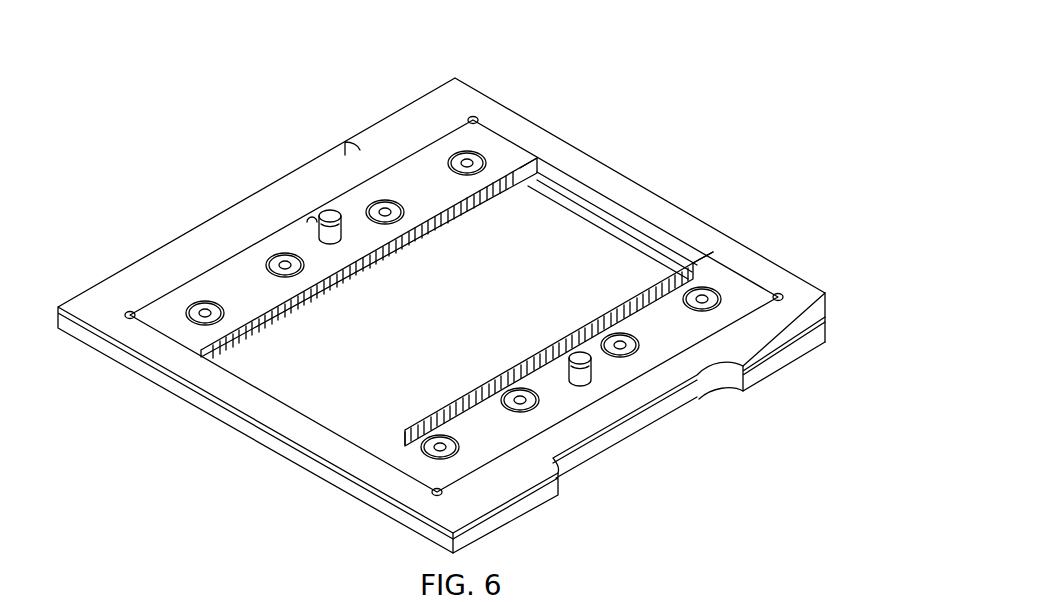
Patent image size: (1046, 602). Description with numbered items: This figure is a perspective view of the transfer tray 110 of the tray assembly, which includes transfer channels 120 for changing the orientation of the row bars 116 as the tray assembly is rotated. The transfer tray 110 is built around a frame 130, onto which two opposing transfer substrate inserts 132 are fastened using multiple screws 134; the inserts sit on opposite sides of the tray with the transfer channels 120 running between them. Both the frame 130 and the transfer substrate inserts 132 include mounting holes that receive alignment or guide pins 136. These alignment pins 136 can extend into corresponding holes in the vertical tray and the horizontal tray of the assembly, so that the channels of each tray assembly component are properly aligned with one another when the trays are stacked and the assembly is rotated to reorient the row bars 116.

The transfer tray 110 is at (565, 88).
The row bars 116 is at (588, 228).
The transfer channels 120 is at (471, 191).
The frame 130 is at (640, 185).
The transfer substrate inserts 132 is at (508, 160).
The screws 134 is at (274, 262).
The alignment pins 136 is at (596, 382).